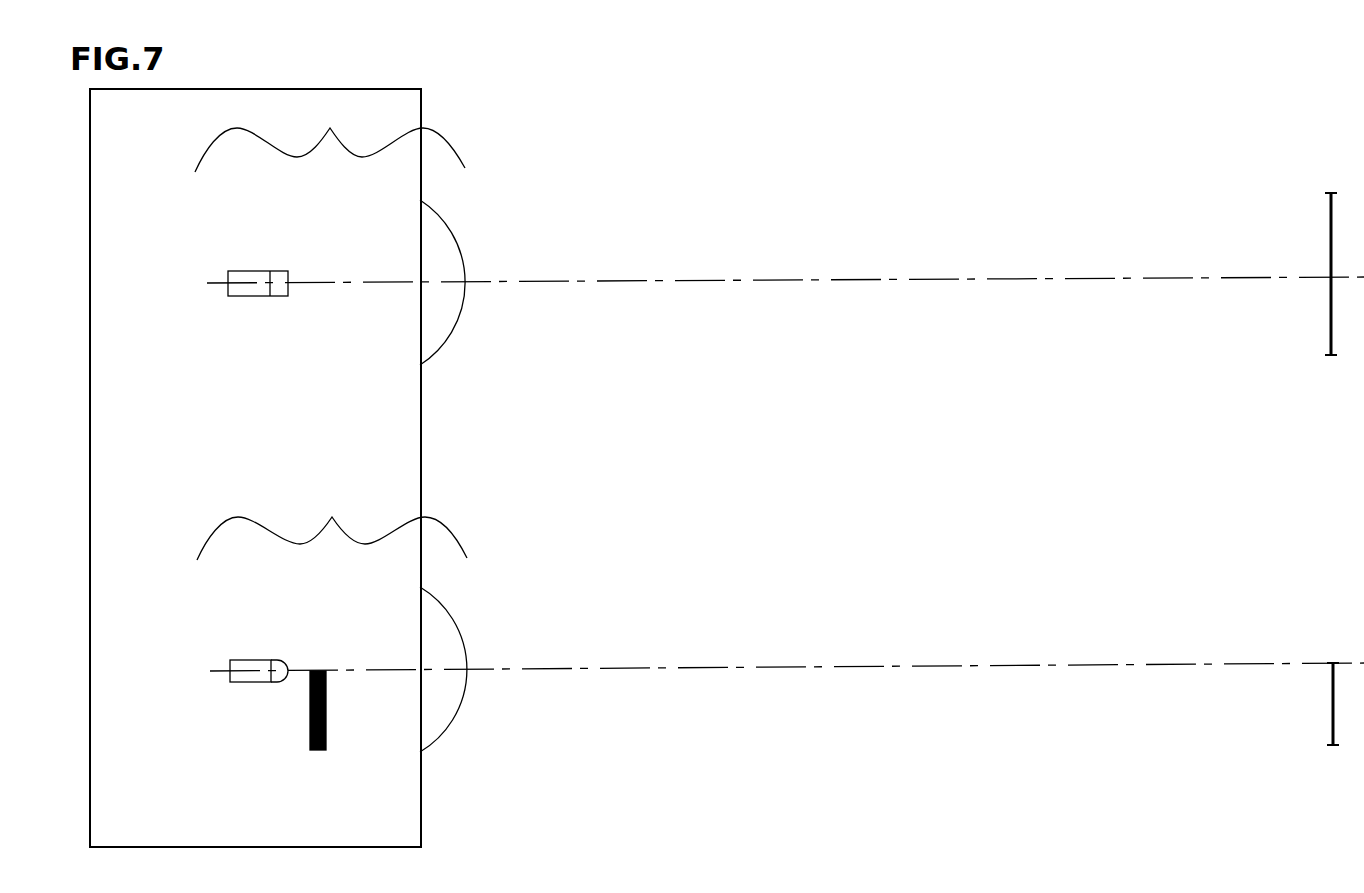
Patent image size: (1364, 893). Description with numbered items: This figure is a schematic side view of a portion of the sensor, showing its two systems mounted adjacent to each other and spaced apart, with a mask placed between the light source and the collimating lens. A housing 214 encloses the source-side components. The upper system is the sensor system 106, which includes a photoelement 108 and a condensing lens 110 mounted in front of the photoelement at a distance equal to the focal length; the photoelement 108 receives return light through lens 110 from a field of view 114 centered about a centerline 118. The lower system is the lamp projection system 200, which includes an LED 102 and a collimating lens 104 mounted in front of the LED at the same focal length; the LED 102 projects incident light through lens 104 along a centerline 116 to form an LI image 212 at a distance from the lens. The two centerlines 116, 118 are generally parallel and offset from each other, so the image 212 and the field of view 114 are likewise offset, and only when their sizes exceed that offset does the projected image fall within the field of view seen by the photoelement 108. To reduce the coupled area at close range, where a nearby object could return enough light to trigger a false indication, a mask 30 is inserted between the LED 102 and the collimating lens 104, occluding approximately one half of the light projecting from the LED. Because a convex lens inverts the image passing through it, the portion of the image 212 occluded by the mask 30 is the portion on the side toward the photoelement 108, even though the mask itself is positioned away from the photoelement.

The housing 214 is at (152, 171).
The sensor system 106 is at (330, 136).
The first optical system 200 is at (332, 525).
The photoelement 108 is at (276, 271).
The condensing lens 110 is at (420, 200).
The centerline 118 is at (588, 280).
The field of view 114 is at (1331, 241).
The LED 102 is at (278, 660).
The collimating lens 104 is at (420, 587).
The centerline 116 is at (602, 669).
The mask 30 is at (310, 713).
The LI image 212 is at (1333, 720).